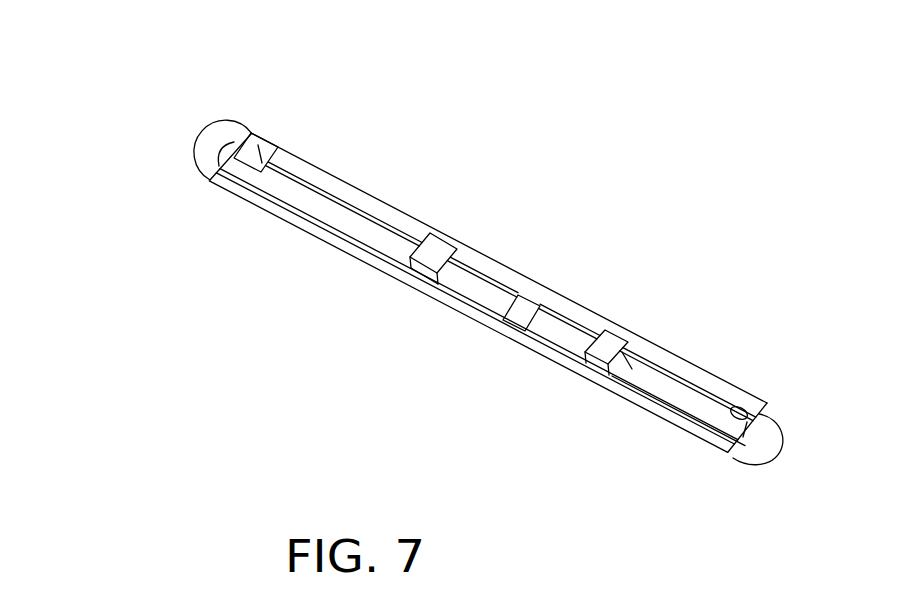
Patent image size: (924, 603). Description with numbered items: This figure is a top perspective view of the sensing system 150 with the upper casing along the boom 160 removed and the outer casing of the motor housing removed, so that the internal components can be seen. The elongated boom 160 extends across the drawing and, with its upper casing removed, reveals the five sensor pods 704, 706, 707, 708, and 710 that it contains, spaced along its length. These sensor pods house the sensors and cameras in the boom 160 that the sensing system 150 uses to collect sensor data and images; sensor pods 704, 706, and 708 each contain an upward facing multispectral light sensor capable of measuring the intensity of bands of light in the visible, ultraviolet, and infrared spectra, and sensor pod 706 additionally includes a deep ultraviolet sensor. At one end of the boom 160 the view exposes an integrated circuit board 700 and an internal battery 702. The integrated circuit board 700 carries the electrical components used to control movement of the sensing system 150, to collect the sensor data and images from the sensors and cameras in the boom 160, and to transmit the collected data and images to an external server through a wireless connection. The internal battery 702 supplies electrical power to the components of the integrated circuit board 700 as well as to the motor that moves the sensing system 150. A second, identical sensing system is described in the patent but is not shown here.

The sensing system 150 is at (779, 250).
The boom 160 is at (367, 186).
The integrated circuit board 700 is at (708, 423).
The internal battery 702 is at (632, 369).
The sensor pod 704 is at (265, 144).
The sensor pod 706 is at (452, 257).
The sensor pod 707 is at (426, 272).
The sensor pod 708 is at (628, 346).
The sensor pod 710 is at (521, 320).